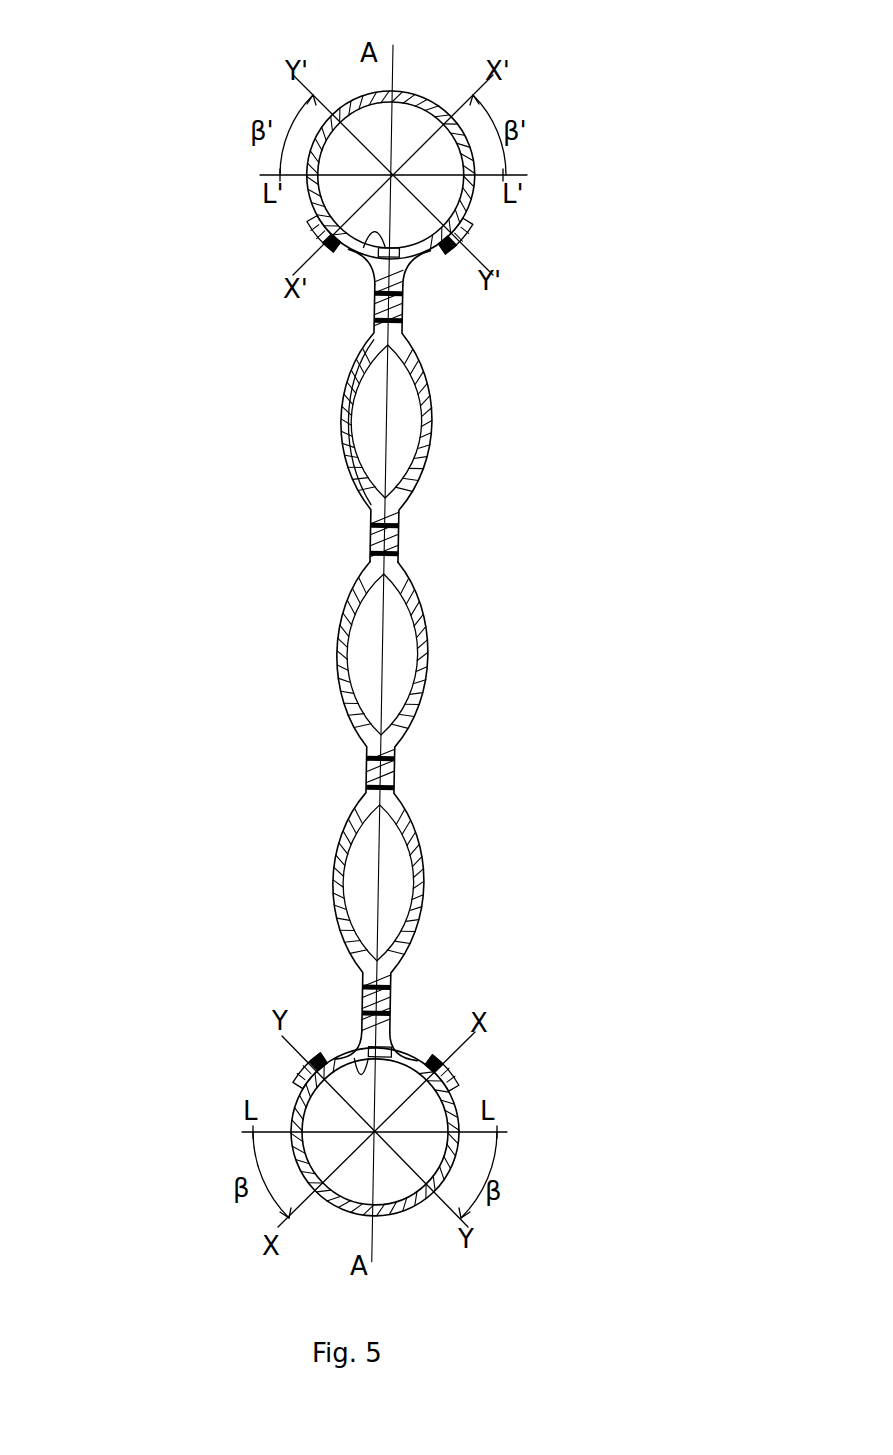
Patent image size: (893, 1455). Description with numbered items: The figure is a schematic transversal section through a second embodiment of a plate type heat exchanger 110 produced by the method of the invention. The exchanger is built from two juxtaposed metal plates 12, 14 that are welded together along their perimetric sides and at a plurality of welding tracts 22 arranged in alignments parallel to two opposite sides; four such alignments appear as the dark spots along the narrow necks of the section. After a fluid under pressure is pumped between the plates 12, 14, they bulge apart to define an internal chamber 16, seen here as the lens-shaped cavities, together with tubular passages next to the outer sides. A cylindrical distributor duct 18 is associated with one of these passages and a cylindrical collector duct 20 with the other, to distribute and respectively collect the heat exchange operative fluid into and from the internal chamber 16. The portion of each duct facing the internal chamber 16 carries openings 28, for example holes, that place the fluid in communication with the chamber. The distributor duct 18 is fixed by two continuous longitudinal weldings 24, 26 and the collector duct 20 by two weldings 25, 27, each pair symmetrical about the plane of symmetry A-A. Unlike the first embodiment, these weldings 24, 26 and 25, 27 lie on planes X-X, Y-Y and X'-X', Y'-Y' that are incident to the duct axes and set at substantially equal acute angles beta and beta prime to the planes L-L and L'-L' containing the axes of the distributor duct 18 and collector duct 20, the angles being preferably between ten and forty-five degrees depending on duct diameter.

The plate type heat exchanger 110 is at (190, 727).
The metal plate 12 is at (432, 427).
The metal plate 14 is at (352, 372).
The internal chamber 16 is at (365, 662).
The distributor duct 18 is at (406, 1216).
The collector duct 20 is at (418, 95).
The welding tracts 22 is at (410, 288).
The welding 24 is at (318, 1070).
The welding 25 is at (318, 247).
The welding 26 is at (440, 1073).
The welding 27 is at (470, 247).
The openings 28 is at (380, 238).